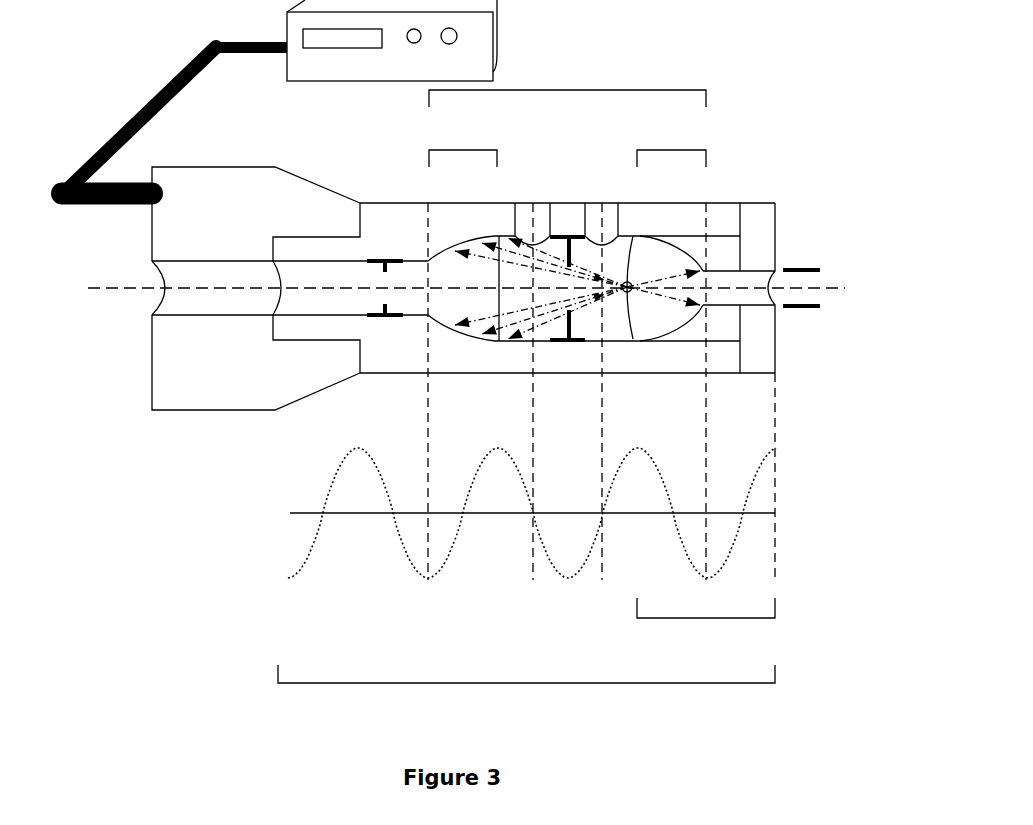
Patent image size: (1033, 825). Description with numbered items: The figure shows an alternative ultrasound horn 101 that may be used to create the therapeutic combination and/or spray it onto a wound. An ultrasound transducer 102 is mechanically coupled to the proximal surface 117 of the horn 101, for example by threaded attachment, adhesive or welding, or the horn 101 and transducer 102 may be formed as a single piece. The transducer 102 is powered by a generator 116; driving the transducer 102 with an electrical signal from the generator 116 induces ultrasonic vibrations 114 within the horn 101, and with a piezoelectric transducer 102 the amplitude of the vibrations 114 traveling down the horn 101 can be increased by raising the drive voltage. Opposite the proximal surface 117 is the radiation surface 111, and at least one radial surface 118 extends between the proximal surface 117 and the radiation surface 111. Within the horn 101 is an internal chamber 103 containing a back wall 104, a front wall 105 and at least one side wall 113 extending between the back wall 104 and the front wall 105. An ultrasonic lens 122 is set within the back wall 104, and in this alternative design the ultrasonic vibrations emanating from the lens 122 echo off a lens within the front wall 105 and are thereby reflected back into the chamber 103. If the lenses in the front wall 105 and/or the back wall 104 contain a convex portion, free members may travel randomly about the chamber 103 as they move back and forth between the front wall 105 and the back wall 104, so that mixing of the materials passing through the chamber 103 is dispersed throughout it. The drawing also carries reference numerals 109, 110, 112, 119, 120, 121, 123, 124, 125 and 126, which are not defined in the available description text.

The ultrasound horn 101 is at (566, 683).
The ultrasound transducer 102 is at (218, 233).
The internal chamber 103 is at (655, 90).
The back wall 104 is at (463, 150).
The front wall 105 is at (672, 150).
The transducers 109 is at (602, 222).
The outlet opening 110 is at (733, 287).
The radiation surface 111 is at (775, 223).
The focusing section 112 is at (722, 618).
The side wall 113 is at (568, 332).
The ultrasonic vibrations 114 is at (333, 480).
The generator 116 is at (462, 47).
The proximal surface 117 is at (273, 323).
The radial surface 118 is at (368, 200).
The chamber wall 119 is at (653, 341).
The central axis 120 is at (113, 288).
The inlet channel 121 is at (243, 305).
The ultrasonic lens 122 is at (466, 273).
The lower reflector wall 123 is at (442, 318).
The focal point 124 is at (631, 284).
The elliptical reflector 125 is at (683, 328).
The lens element 126 is at (640, 258).